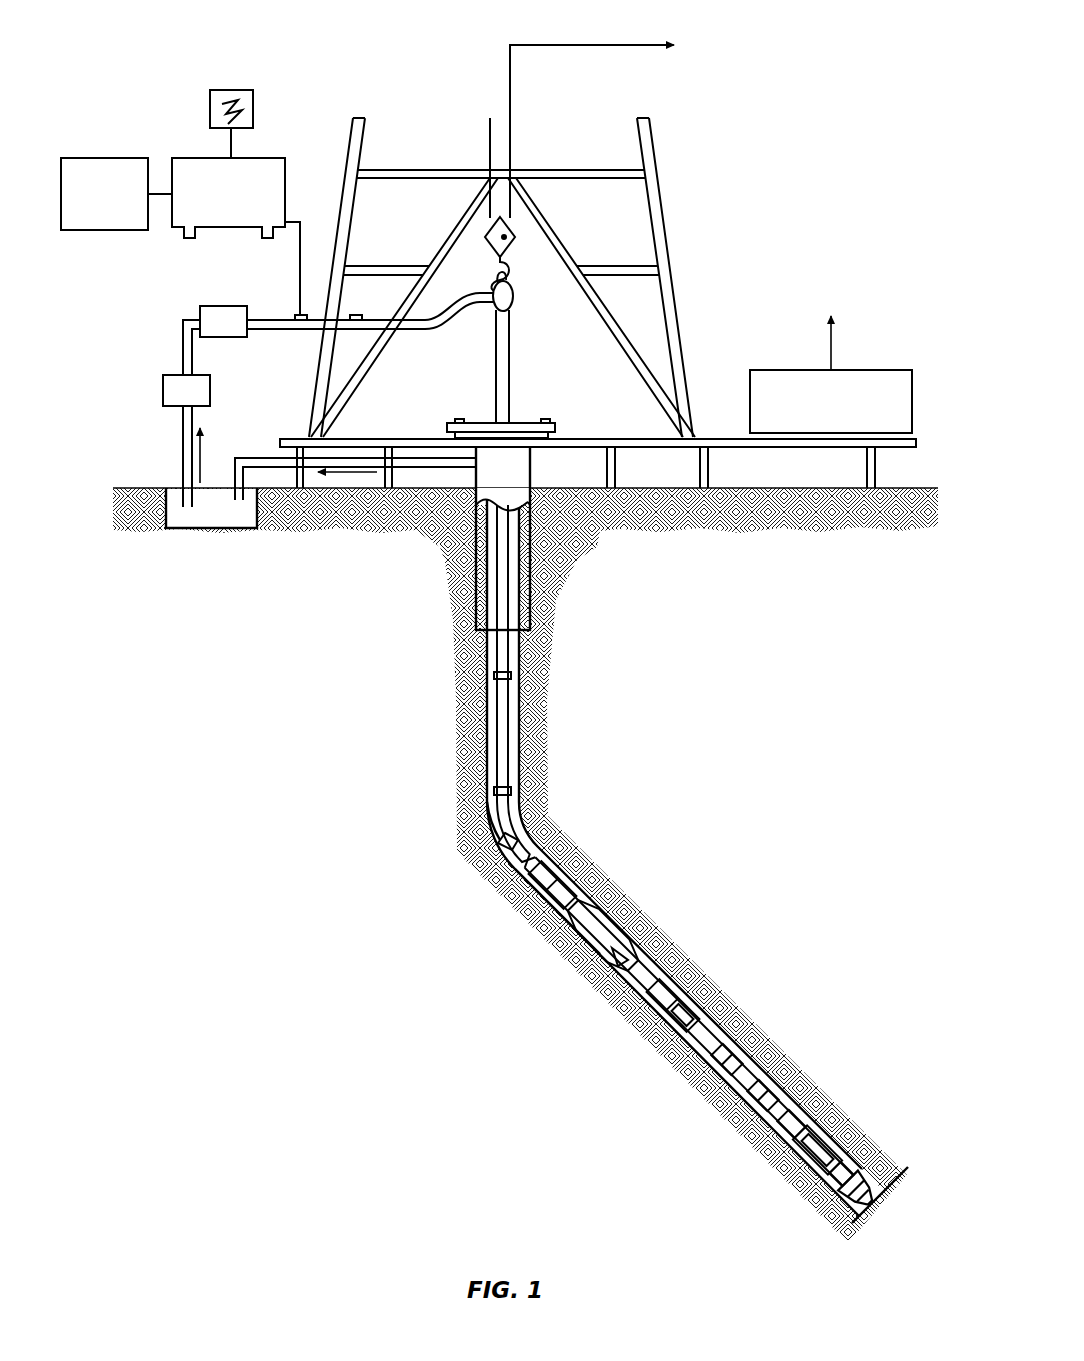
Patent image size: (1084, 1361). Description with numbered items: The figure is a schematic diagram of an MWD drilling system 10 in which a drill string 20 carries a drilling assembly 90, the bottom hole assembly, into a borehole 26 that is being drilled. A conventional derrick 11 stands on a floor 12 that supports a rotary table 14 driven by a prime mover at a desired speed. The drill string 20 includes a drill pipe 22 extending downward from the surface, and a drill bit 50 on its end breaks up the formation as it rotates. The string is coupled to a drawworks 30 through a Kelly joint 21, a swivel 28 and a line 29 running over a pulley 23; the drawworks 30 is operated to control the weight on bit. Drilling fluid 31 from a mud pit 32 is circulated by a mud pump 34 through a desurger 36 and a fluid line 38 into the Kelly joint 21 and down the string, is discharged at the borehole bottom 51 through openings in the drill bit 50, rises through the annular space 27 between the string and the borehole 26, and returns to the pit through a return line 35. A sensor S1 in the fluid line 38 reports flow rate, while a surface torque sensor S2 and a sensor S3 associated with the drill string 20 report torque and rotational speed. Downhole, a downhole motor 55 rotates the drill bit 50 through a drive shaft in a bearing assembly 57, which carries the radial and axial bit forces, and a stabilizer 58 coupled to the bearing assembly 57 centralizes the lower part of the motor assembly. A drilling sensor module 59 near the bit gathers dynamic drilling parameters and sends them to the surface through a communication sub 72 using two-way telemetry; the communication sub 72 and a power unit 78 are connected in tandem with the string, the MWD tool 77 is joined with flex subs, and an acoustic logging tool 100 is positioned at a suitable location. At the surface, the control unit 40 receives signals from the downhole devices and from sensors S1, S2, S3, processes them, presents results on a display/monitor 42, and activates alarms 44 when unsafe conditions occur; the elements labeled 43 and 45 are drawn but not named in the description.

The MWD drilling system 10 is at (422, 52).
The derrick 11 is at (670, 278).
The floor 12 is at (692, 438).
The rotary table 14 is at (511, 423).
The drill string 20 is at (516, 733).
The Kelly joint 21 is at (509, 345).
The drill pipe 22 is at (486, 705).
The pulley 23 is at (505, 237).
The borehole 26 is at (527, 820).
The annular space 27 is at (548, 853).
The swivel 28 is at (498, 308).
The line 29 is at (512, 135).
The drawworks 30 is at (880, 370).
The drilling fluid 31 is at (178, 490).
The mud pit 32 is at (198, 528).
The mud pump 34 is at (172, 375).
The return line 35 is at (435, 470).
The desurger 36 is at (210, 306).
The fluid line 38 is at (295, 330).
The surface control unit 40 is at (210, 158).
The display/monitor 42 is at (232, 90).
The sensor 43 is at (296, 314).
The alarms 44 is at (113, 232).
The communication line 45 is at (300, 218).
The drill bit 50 is at (876, 1162).
The borehole bottom 51 is at (850, 1228).
The downhole motor 55 is at (717, 1013).
The bearing assembly 57 is at (840, 1122).
The stabilizer 58 is at (836, 1147).
The drilling sensor module 59 is at (835, 1168).
The communication sub 72 is at (492, 828).
The MWD tool 77 is at (595, 952).
The power unit 78 is at (513, 860).
The drilling assembly 90 is at (748, 905).
The acoustic logging tool 100 is at (792, 1088).
The sensor S1 is at (352, 314).
The surface torque sensor S2 is at (549, 418).
The sensor S3 is at (458, 418).